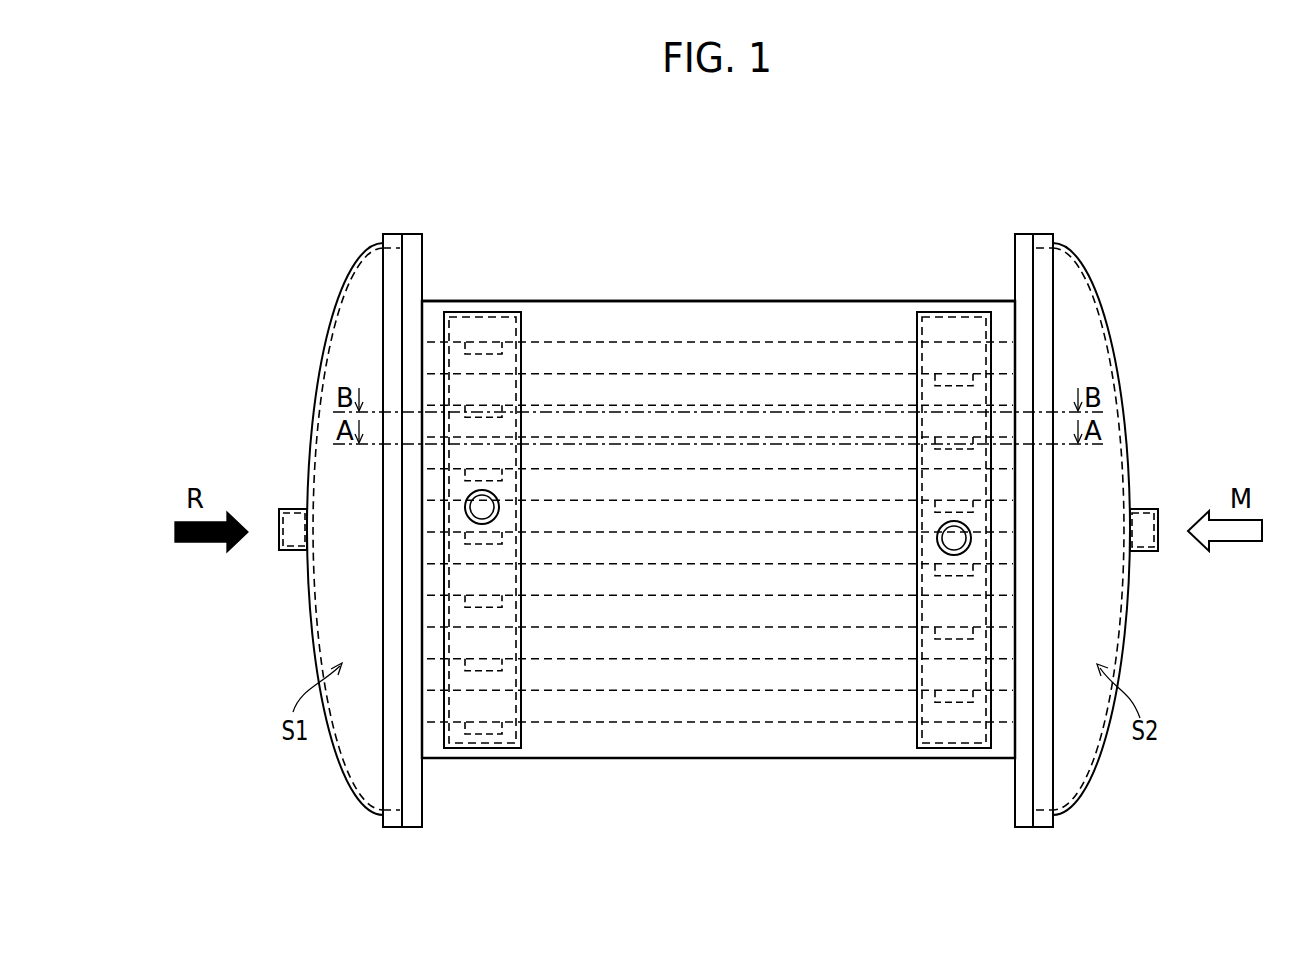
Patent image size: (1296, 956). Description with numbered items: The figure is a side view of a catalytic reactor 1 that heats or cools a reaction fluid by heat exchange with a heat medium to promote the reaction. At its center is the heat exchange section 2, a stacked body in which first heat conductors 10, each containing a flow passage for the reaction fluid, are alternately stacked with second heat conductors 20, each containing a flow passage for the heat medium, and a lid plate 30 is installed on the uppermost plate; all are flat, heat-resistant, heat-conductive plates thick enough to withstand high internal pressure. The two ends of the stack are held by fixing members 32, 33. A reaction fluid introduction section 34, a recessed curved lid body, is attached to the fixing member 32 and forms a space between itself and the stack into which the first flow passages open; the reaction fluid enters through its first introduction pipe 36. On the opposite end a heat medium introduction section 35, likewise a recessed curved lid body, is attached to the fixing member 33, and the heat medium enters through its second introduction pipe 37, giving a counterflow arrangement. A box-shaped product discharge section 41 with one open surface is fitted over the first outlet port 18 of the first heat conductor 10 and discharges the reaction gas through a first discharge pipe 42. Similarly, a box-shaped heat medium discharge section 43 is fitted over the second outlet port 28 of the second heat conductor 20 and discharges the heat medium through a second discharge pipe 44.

The reactor 1 is at (897, 188).
The heat exchange section 2 is at (714, 298).
The first heat conductor 10 is at (650, 448).
The first outlet port 18 is at (957, 448).
The second heat conductor 20 is at (607, 420).
The second outlet port 28 is at (480, 417).
The lid plate 30 is at (777, 317).
The fixing member 32 is at (415, 238).
The fixing member 33 is at (1023, 240).
The reaction fluid introduction section 34 is at (363, 317).
The heat medium introduction section 35 is at (1073, 316).
The first introduction pipe 36 is at (295, 508).
The second introduction pipe 37 is at (1140, 508).
The product discharge section 41 is at (953, 310).
The first discharge pipe 42 is at (943, 552).
The heat medium discharge section 43 is at (490, 310).
The second discharge pipe 44 is at (496, 519).